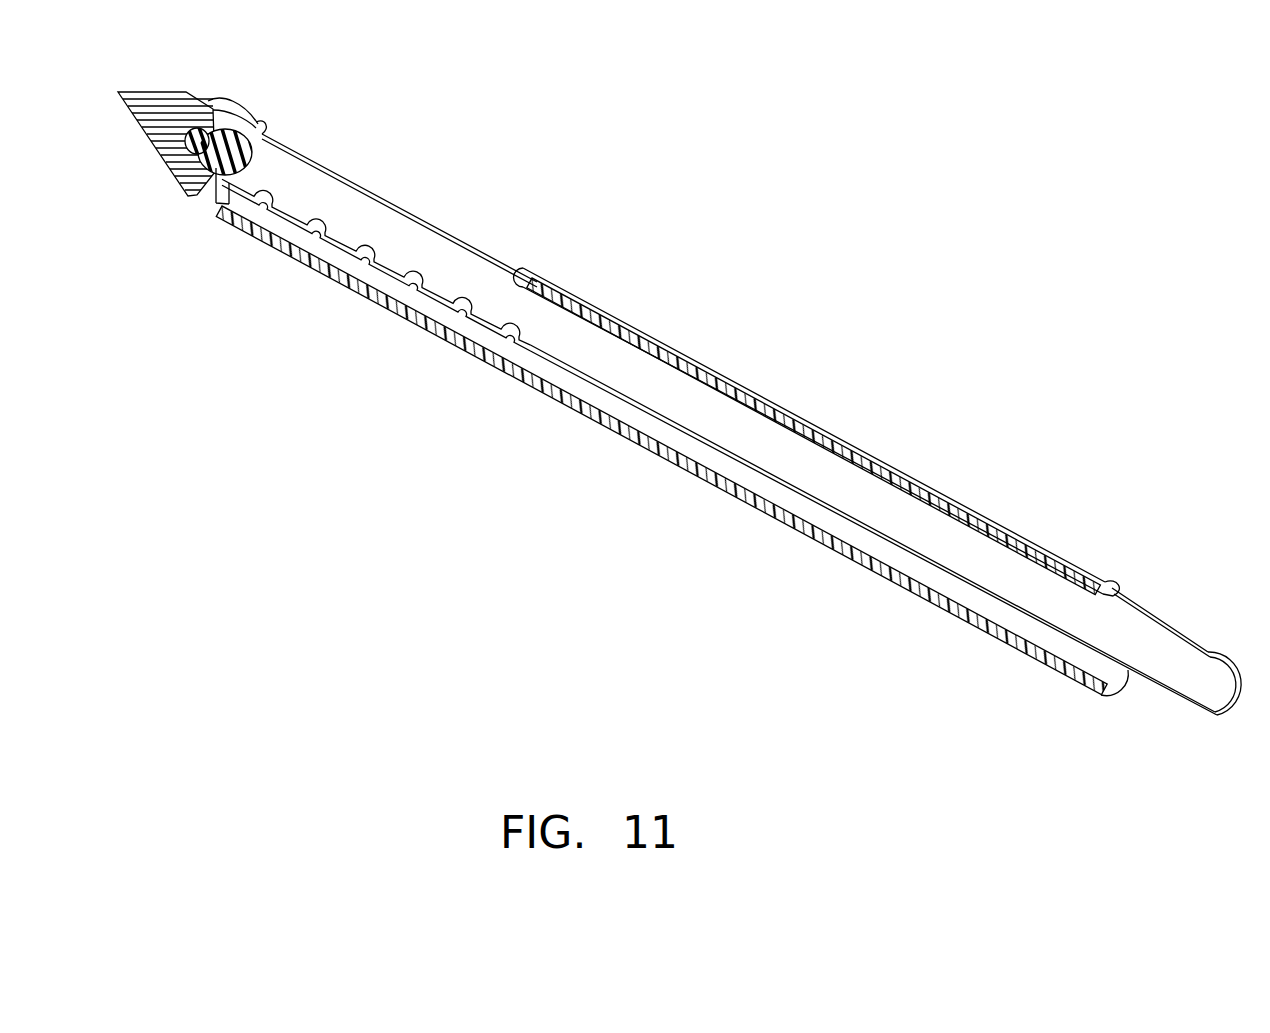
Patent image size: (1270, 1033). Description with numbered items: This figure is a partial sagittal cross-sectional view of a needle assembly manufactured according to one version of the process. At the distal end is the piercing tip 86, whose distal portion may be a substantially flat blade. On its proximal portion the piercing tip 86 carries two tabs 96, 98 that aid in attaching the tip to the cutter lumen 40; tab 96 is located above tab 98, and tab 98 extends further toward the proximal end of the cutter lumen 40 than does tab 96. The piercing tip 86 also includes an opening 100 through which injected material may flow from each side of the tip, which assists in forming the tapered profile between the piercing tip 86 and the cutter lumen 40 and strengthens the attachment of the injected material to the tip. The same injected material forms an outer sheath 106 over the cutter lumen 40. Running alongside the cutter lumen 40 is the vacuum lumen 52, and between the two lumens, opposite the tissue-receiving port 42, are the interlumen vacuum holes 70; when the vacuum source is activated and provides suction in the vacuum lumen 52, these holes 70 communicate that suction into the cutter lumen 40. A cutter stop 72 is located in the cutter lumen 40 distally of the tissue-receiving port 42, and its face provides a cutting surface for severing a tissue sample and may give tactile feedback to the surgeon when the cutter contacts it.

The cutter lumen 40 is at (859, 480).
The tissue-receiving port 42 is at (330, 170).
The vacuum lumen 52 is at (942, 584).
The interlumen vacuum holes 70 is at (410, 285).
The cutter stop 72 is at (266, 126).
The piercing tip 86 is at (166, 89).
The tab 96 is at (178, 98).
The tab 98 is at (212, 183).
The opening 100 is at (200, 158).
The outer sheath 106 is at (725, 376).